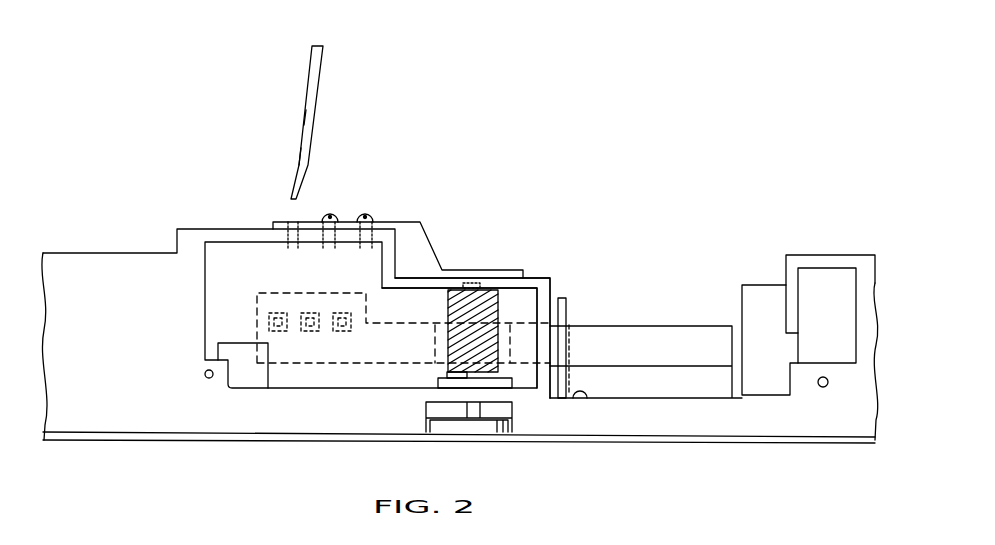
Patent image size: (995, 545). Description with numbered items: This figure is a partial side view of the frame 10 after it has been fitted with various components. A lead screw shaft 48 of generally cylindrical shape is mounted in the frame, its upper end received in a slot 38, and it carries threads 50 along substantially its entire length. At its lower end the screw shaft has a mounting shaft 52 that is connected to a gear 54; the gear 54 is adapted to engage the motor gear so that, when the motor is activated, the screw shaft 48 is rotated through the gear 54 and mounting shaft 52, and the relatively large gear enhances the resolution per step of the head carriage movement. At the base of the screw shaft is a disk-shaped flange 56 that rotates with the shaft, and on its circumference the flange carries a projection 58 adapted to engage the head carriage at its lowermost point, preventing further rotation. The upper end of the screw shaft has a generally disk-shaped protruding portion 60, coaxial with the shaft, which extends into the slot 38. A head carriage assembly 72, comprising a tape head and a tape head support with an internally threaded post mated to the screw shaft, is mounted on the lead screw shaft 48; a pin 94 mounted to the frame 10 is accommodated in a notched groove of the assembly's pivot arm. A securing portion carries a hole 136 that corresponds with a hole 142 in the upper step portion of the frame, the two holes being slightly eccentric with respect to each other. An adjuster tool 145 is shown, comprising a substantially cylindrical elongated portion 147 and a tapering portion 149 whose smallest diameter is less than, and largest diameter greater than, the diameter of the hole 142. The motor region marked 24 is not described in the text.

The frame 10 is at (88, 420).
The drive motor 24 is at (659, 385).
The slot 38 is at (483, 287).
The lead screw shaft 48 is at (490, 302).
The threads 50 is at (450, 343).
The mounting shaft 52 is at (471, 415).
The gear 54 is at (494, 422).
The flange 56 is at (440, 382).
The projection 58 is at (462, 380).
The protruding portion 60 is at (470, 283).
The head carriage assembly 72 is at (300, 375).
The pin 94 is at (567, 298).
The hole 136 is at (291, 222).
The hole 142 is at (293, 232).
The adjuster tool 145 is at (311, 62).
The elongated portion 147 is at (305, 110).
The tapering portion 149 is at (300, 148).